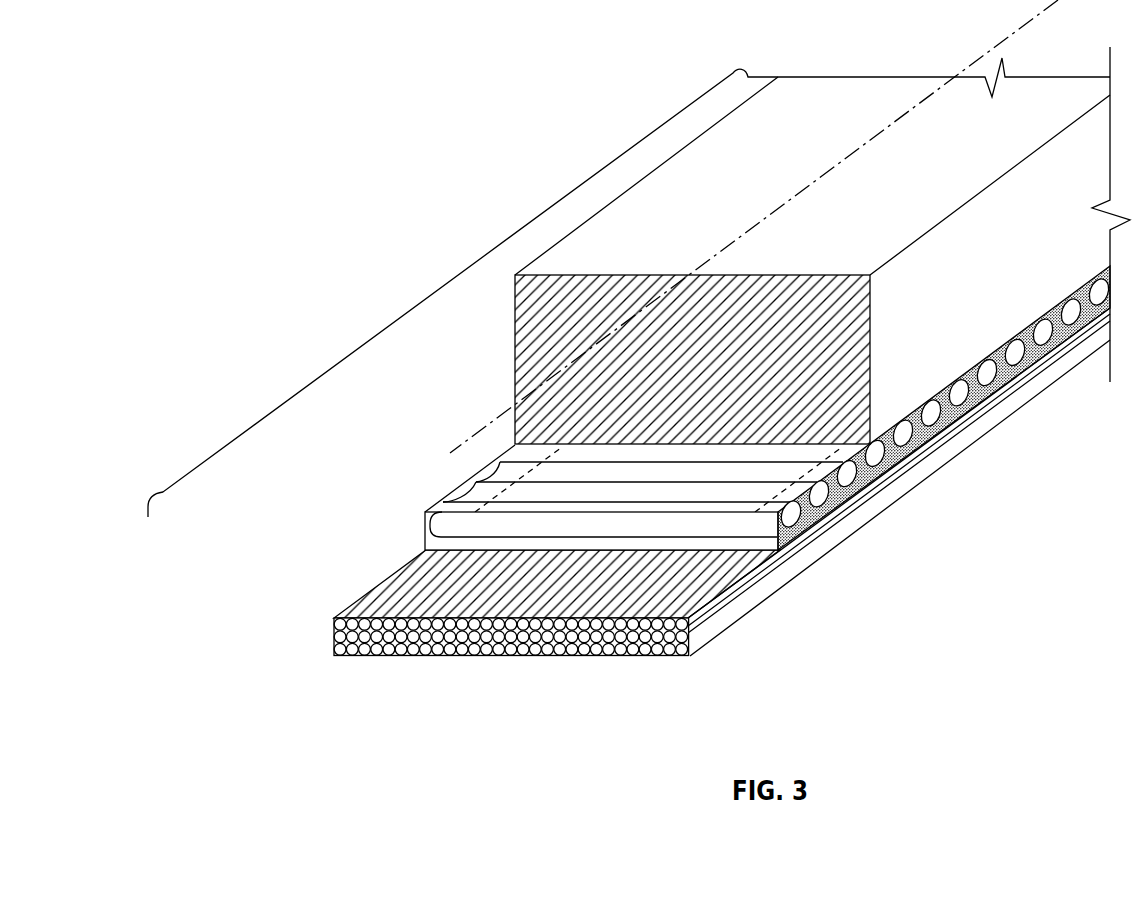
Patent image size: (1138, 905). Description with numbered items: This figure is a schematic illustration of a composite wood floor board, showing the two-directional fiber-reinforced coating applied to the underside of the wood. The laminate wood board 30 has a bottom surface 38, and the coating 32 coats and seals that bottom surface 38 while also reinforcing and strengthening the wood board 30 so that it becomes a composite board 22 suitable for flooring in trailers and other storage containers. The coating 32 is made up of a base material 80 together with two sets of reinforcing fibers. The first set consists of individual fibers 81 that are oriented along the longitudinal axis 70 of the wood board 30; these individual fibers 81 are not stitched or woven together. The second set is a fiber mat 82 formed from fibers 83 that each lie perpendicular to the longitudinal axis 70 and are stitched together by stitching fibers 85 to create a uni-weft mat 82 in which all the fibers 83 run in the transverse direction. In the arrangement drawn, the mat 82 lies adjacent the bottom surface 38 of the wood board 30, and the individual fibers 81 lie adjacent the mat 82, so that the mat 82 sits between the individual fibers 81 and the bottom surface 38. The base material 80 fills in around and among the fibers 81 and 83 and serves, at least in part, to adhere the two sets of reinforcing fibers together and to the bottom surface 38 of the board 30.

The composite board 22 is at (1005, 503).
The laminate wood board 30 is at (472, 348).
The coating 32 is at (452, 272).
The bottom surface 38 is at (533, 445).
The longitudinal axis 70 is at (752, 232).
The base material 80 is at (940, 392).
The individual fibers 81 is at (413, 651).
The fiber mat 82 is at (758, 531).
The fibers 83 is at (900, 437).
The stitching fibers 85 is at (491, 498).